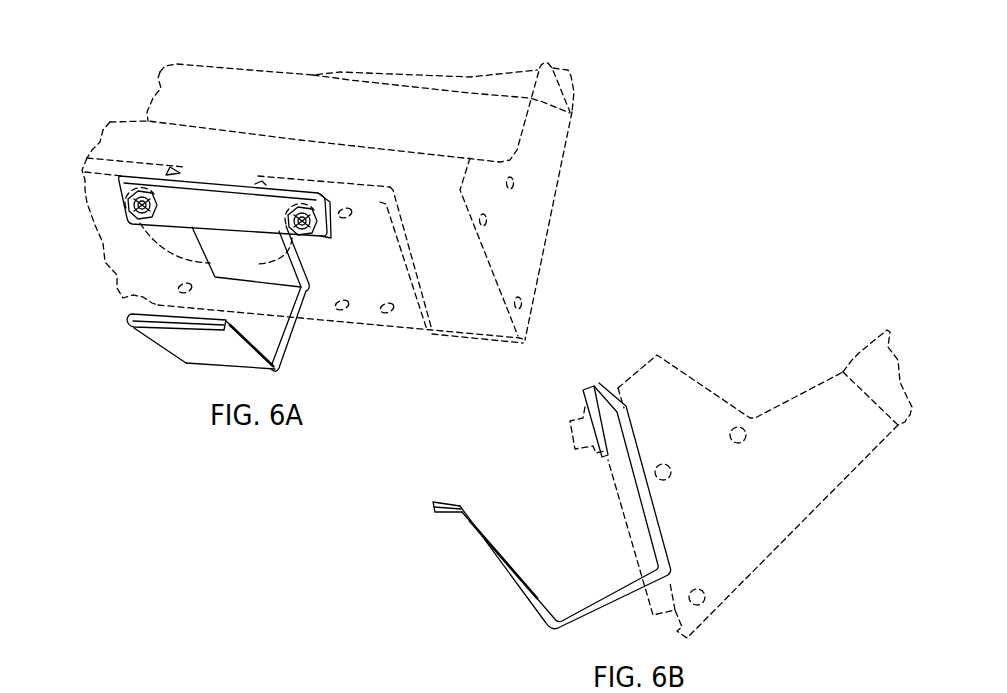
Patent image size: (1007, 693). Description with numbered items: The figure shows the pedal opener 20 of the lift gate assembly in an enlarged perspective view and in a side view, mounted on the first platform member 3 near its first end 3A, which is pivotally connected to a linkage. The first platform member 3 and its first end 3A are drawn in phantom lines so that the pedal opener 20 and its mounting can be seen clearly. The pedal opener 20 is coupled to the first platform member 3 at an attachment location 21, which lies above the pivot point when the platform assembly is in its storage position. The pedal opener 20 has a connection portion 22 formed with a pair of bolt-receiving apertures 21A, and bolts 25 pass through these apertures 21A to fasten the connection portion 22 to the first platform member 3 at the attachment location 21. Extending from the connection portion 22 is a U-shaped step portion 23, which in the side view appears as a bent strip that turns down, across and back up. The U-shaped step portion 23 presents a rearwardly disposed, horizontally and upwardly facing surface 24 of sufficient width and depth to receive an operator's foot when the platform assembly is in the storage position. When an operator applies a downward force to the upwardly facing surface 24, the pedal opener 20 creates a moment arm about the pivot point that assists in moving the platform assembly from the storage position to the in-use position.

In FIG. 6A, the first platform member 3 is at (486, 78).
In FIG. 6B, the first platform member 3 is at (861, 353).
In FIG. 6A, the first end 3A is at (534, 210).
In FIG. 6B, the first end 3A is at (782, 428).
In FIG. 6A, the pedal opener 20 is at (138, 363).
In FIG. 6B, the pedal opener 20 is at (455, 555).
In FIG. 6A, the attachment location 21 is at (211, 187).
In FIG. 6B, the attachment location 21 is at (586, 404).
In FIG. 6A, the bolt-receiving apertures 21A is at (133, 219).
In FIG. 6A, the connection portion 22 is at (218, 212).
In FIG. 6A, the U-shaped step portion 23 is at (209, 302).
In FIG. 6B, the U-shaped step portion 23 is at (535, 506).
In FIG. 6A, the upwardly facing surface 24 is at (158, 305).
In FIG. 6B, the upwardly facing surface 24 is at (442, 502).
In FIG. 6A, the bolts 25 is at (210, 262).
In FIG. 6B, the bolts 25 is at (573, 417).